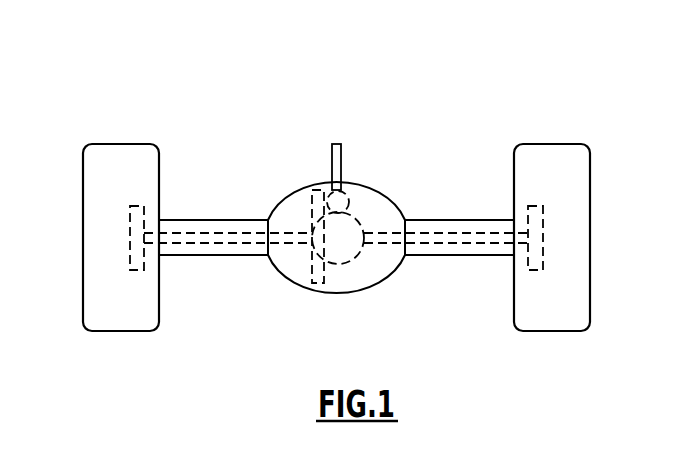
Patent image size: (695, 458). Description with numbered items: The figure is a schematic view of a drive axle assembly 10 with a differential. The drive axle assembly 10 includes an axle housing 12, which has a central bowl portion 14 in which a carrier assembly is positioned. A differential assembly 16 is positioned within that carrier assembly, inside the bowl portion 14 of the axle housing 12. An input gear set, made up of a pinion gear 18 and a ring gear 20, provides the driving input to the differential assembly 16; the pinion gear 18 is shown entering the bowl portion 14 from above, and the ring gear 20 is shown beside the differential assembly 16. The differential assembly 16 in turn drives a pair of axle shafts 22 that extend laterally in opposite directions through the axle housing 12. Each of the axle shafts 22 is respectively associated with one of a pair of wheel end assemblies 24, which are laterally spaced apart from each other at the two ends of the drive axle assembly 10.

The drive axle assembly 10 is at (449, 137).
The axle housing 12 is at (213, 220).
The bowl portion 14 is at (303, 187).
The differential assembly 16 is at (366, 213).
The pinion gear 18 is at (353, 187).
The ring gear 20 is at (310, 272).
The axle shafts 22 is at (200, 245).
The wheel end assemblies 24 is at (85, 150).